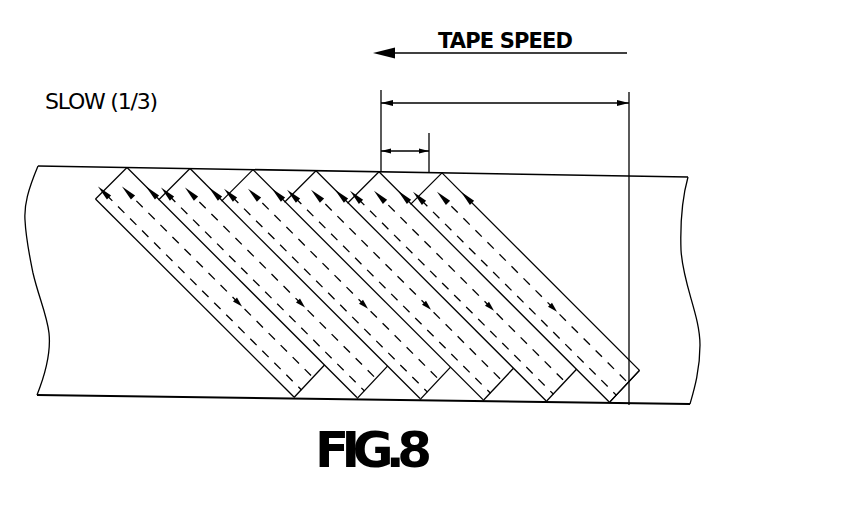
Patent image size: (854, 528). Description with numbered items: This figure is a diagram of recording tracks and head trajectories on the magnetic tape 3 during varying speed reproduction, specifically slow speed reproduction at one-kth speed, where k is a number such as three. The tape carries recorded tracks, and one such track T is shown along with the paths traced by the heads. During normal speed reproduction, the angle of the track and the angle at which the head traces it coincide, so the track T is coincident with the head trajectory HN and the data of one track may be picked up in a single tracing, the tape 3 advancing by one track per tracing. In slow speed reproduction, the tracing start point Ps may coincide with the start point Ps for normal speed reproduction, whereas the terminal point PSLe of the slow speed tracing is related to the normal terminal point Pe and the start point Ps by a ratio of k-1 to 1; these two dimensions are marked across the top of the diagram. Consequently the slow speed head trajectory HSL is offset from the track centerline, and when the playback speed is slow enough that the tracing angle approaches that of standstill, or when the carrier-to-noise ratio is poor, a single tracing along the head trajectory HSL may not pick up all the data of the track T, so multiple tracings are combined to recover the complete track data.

The magnetic tape 3 is at (691, 234).
The head trajectory HN is at (497, 257).
The head trajectory HSL is at (500, 277).
The terminal point PSLe is at (380, 172).
The terminal point Pe is at (430, 193).
The start point Ps is at (631, 391).
The track T is at (638, 378).
The recording unit 1 is at (505, 93).
The ratio portion (k−1) k-1 is at (405, 139).